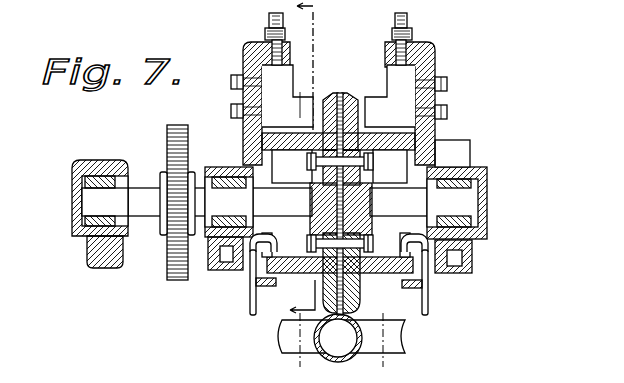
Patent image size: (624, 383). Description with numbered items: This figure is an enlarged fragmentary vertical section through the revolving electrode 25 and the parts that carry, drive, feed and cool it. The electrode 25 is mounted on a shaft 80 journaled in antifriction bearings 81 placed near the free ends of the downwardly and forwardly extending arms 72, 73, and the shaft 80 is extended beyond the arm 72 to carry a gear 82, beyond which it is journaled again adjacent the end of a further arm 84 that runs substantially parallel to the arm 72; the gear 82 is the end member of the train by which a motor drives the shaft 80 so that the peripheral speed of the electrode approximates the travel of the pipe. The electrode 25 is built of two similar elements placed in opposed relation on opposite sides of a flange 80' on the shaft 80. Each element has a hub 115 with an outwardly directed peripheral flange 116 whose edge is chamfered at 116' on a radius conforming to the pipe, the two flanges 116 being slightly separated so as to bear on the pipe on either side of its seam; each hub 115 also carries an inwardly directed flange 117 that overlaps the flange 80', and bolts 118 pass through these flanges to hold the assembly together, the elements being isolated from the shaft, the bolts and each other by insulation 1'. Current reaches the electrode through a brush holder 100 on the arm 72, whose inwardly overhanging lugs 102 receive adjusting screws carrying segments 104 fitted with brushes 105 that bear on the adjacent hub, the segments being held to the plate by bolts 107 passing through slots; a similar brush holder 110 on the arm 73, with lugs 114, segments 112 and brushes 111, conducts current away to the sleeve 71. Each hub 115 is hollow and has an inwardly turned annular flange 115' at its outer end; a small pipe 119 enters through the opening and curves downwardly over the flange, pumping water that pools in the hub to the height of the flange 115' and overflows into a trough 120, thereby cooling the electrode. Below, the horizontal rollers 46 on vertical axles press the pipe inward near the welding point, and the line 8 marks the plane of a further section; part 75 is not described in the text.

The section line 8— 8 is at (308, 156).
The shaft 80 is at (197, 202).
The flange 80' is at (422, 202).
The gear 82 is at (178, 280).
The arm 84 is at (87, 257).
The antifriction bearings 81 is at (225, 166).
The brush holder 100 is at (244, 48).
The brush holder 110 is at (436, 48).
The segments 104 is at (287, 96).
The segments 112 is at (390, 96).
The brushes 105 is at (303, 97).
The lugs 102 is at (290, 45).
The lugs 114 is at (394, 36).
The bolts 107 is at (232, 106).
The brushes 111 is at (450, 130).
The revolving electrode 25 is at (342, 94).
The chamfered edge 116' is at (327, 87).
The inwardly directed flange 117 is at (323, 161).
The bolts 118 is at (372, 160).
The annular flange 115' is at (324, 239).
The arm 72 is at (226, 271).
The arm 73 is at (472, 258).
The pipe 119 is at (250, 305).
The trough 120 is at (253, 317).
The hub 115 is at (436, 274).
The peripheral flange 116 is at (386, 295).
The sleeve 71 is at (306, 351).
The horizontal rollers 46 is at (372, 348).
The insulation 1' is at (273, 311).
The part 75 is at (497, 5).